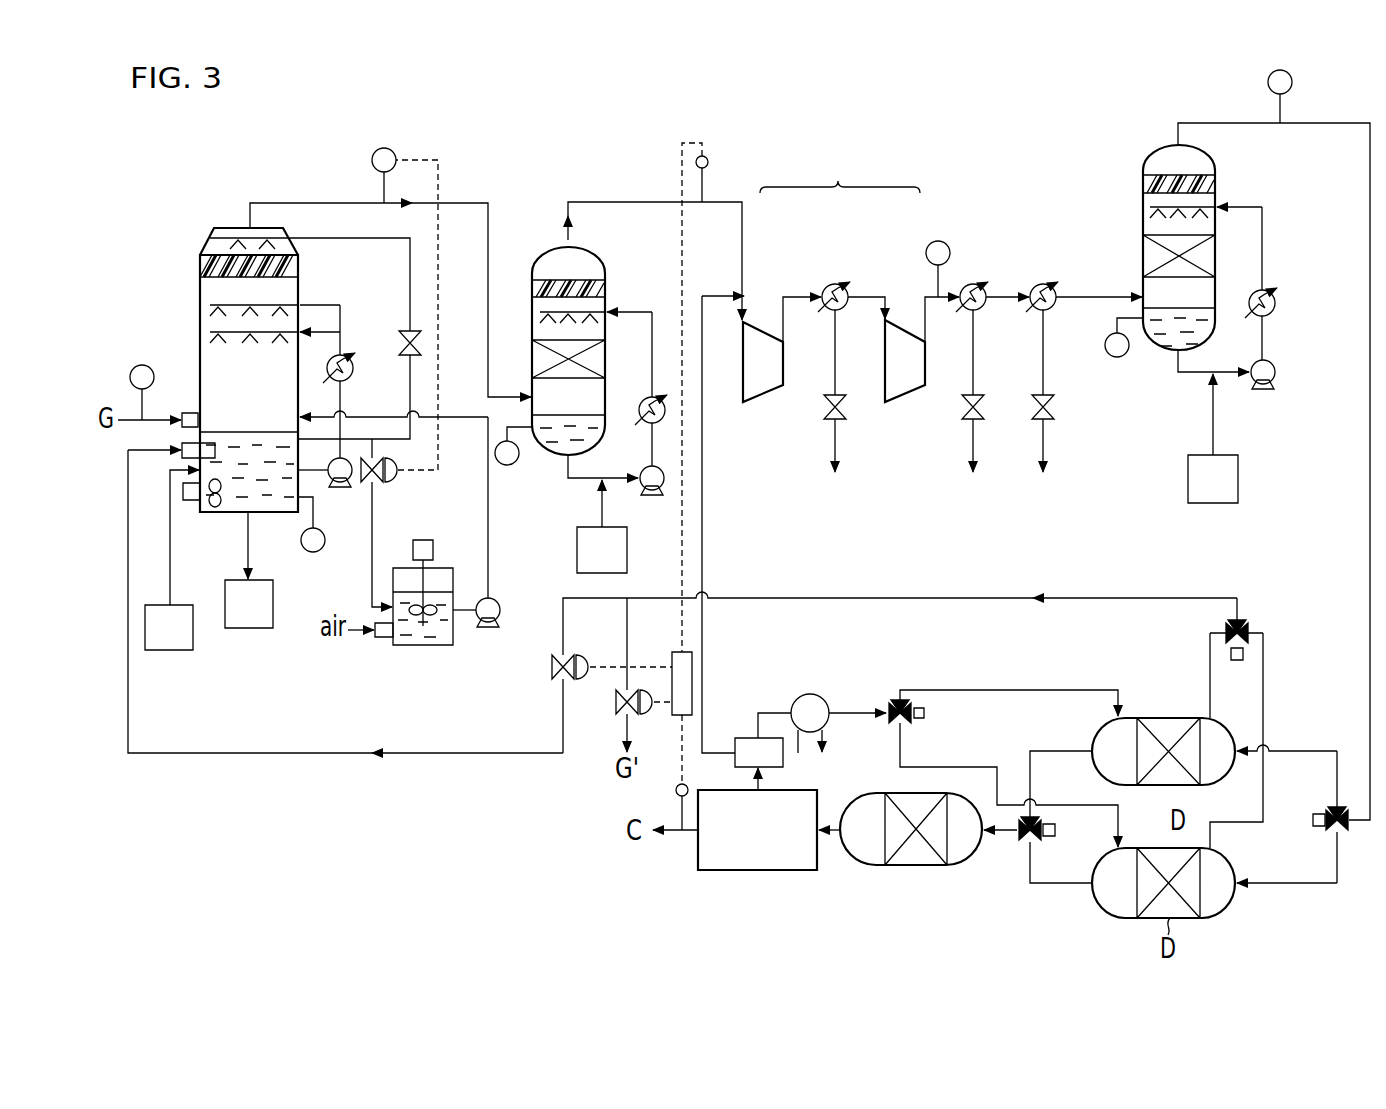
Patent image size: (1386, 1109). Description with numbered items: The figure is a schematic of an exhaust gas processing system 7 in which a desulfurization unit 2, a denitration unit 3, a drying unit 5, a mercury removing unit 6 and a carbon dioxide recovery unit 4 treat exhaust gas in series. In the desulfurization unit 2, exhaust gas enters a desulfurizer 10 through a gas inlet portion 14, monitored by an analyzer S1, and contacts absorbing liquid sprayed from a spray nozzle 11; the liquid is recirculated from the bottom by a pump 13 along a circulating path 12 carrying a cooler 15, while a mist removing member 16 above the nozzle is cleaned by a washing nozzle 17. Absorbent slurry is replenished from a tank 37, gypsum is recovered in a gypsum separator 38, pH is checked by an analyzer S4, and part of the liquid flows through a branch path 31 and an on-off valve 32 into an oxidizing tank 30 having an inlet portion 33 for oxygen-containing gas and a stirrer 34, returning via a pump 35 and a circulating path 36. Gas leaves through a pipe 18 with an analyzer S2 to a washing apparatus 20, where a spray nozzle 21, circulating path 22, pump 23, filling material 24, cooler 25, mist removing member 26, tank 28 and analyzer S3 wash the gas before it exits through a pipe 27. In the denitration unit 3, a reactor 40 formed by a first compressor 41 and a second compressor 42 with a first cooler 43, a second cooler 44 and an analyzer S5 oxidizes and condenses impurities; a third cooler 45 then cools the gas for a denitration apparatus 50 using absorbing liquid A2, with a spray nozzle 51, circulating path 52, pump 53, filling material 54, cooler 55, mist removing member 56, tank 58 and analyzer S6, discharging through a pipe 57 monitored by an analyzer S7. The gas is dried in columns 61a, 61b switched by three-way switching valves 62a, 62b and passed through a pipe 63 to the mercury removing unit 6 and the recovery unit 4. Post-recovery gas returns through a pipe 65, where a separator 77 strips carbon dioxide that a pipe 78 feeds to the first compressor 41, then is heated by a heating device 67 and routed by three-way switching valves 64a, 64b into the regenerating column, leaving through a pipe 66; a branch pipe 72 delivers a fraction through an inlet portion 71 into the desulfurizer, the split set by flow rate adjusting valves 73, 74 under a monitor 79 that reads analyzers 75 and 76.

The desulfurization unit 2 is at (417, 132).
The denitration unit 3 is at (976, 150).
The carbon dioxide recovery unit 4 is at (750, 872).
The drying unit 5 is at (1308, 636).
The mercury removing unit 6 is at (900, 868).
The exhaust gas processing system 7 is at (746, 118).
The desulfurizer 10 is at (210, 226).
The spray nozzle 11 is at (212, 304).
The circulating path 12 is at (346, 404).
The pump 13 is at (340, 488).
The gas inlet portion 14 is at (188, 412).
The cooler 15 is at (348, 357).
The mist removing member 16 is at (298, 280).
The washing nozzle 17 is at (232, 244).
The pipe 18 is at (332, 202).
The washing apparatus 20 is at (540, 238).
The spray nozzle 21 is at (542, 310).
The circulating path 22 is at (652, 330).
The pump 23 is at (652, 496).
The filling material 24 is at (592, 354).
The cooler 25 is at (640, 408).
The mist removing member 26 is at (590, 278).
The pipe 27 is at (602, 202).
The tank 28 is at (576, 552).
The oxidizing tank 30 is at (418, 652).
The branch path 31 is at (372, 530).
The on-off valve 32 is at (400, 456).
The inlet portion 33 is at (384, 638).
The stirrer 34 is at (425, 586).
The pump 35 is at (500, 610).
The circulating path 36 is at (490, 516).
The tank 37 is at (168, 652).
The gypsum separator 38 is at (252, 630).
The reactor 40 is at (840, 169).
The first compressor 41 is at (770, 330).
The second compressor 42 is at (910, 330).
The first cooler 43 is at (838, 284).
The second cooler 44 is at (975, 284).
The third cooler 45 is at (1045, 284).
The denitration apparatus 50 is at (1136, 158).
The spray nozzle 51 is at (1152, 212).
The circulating path 52 is at (1264, 250).
The pump 53 is at (1263, 390).
The filling material 54 is at (1154, 256).
The cooler 55 is at (1272, 310).
The mist removing member 56 is at (1190, 168).
The pipe 57 is at (1368, 524).
The tank 58 is at (1187, 480).
The column 61a is at (1128, 716).
The column 61b is at (1176, 782).
The three-way switching valve 62a is at (1346, 834).
The three-way switching valve 62b is at (1036, 844).
The pipe 63 is at (1010, 840).
The three-way switching valve 64a is at (912, 724).
The three-way switching valve 64b is at (1250, 620).
The pipe 65 is at (853, 712).
The pipe 66 is at (1196, 597).
The heating device 67 is at (810, 694).
The inlet portion 71 is at (180, 436).
The branch pipe 72 is at (288, 754).
The flow rate adjusting valve 73 is at (648, 716).
The flow rate adjusting valve 74 is at (582, 658).
The analyzer 75 is at (676, 790).
The analyzer 76 is at (710, 162).
The separator 77 is at (736, 737).
The pipe 78 is at (704, 558).
The monitor 79 is at (672, 652).
The analyzer S1 is at (142, 365).
The analyzer S2 is at (384, 148).
The analyzer S3 is at (516, 462).
The analyzer S4 is at (313, 553).
The analyzer S5 is at (940, 240).
The analyzer S6 is at (1117, 358).
The analyzer S7 is at (1293, 82).
The absorbing liquid A2 is at (1162, 346).